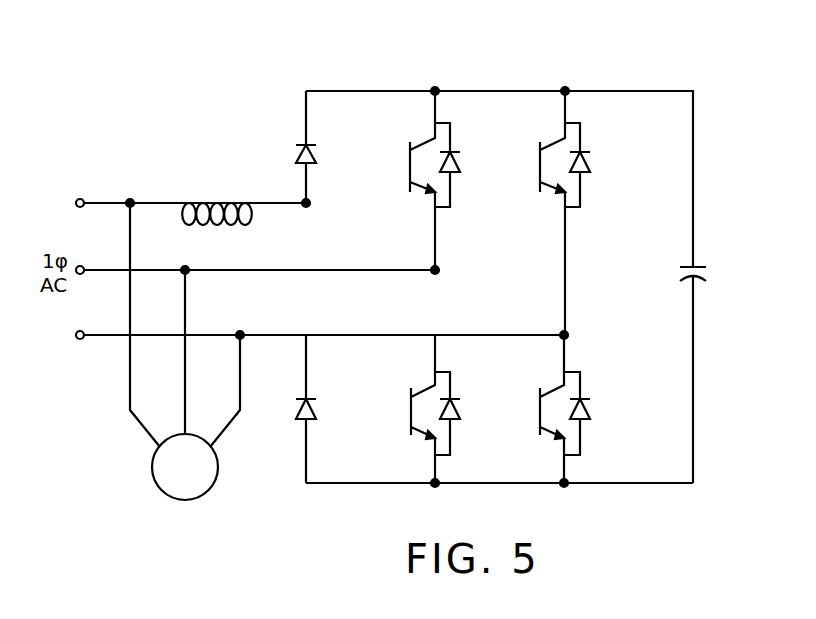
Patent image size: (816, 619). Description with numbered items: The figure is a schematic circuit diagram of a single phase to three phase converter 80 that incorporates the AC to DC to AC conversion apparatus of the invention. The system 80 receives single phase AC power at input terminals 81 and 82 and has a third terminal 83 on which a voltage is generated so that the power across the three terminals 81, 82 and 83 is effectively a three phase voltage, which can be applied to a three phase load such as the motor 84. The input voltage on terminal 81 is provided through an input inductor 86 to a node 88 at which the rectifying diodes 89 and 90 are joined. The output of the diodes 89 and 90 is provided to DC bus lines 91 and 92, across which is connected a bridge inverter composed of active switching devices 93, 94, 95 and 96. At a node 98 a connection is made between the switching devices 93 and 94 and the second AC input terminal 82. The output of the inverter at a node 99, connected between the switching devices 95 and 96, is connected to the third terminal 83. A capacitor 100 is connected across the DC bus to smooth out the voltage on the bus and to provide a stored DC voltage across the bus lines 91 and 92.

The single phase to three phase converter 80 is at (617, 85).
The input terminal 81 is at (73, 198).
The input terminal 82 is at (83, 275).
The third terminal 83 is at (78, 340).
The motor 84 is at (152, 465).
The input inductor 86 is at (205, 203).
The node 88 is at (308, 206).
The rectifying diode 89 is at (295, 150).
The rectifying diode 90 is at (297, 423).
The DC bus line 91 is at (397, 88).
The DC bus line 92 is at (333, 487).
The active switching device 93 is at (410, 185).
The active switching device 94 is at (412, 435).
The active switching device 95 is at (540, 185).
The active switching device 96 is at (540, 435).
The node 98 is at (440, 268).
The node 99 is at (567, 335).
The capacitor 100 is at (698, 265).